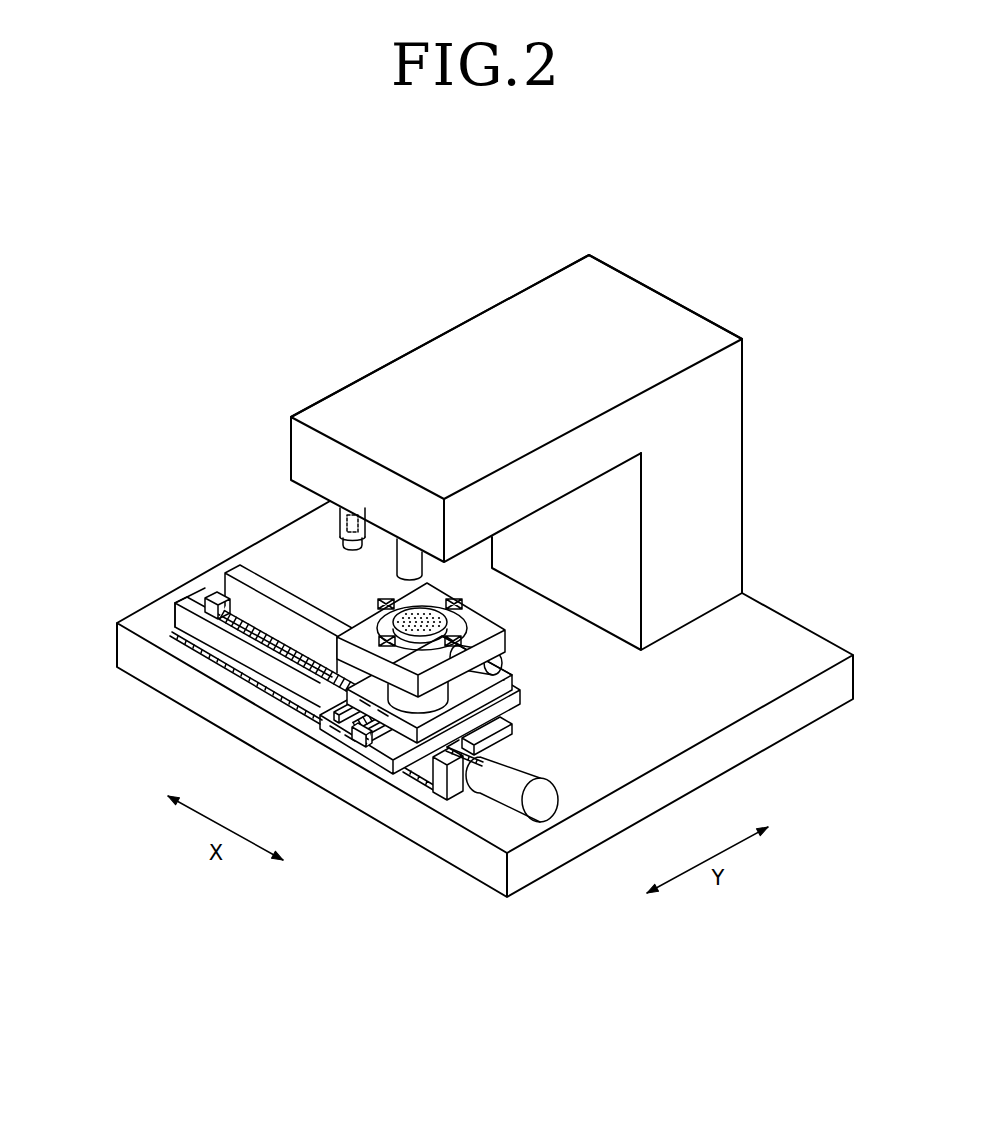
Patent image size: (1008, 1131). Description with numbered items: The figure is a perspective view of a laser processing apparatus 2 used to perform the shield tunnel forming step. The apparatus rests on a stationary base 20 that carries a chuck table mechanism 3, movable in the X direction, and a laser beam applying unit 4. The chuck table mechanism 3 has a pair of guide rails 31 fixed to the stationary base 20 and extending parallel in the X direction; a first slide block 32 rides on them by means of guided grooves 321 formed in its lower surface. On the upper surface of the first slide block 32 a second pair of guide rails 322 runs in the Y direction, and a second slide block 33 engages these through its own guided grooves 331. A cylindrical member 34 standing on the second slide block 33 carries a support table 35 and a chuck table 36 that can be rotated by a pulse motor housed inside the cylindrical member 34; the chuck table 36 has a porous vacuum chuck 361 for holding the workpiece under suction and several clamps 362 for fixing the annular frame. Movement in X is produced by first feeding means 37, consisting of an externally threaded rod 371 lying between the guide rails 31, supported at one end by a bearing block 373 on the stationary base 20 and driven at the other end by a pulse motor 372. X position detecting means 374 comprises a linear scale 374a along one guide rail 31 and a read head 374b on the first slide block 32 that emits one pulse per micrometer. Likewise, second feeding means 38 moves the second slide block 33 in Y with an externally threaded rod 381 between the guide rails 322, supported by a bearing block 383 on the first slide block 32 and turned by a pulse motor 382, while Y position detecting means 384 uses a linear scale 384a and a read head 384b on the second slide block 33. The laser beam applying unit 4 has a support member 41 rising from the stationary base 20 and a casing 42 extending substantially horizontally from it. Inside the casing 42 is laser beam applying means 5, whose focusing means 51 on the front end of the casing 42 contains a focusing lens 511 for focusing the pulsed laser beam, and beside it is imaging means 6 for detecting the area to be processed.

The laser processing apparatus 2 is at (715, 277).
The stationary base 20 is at (805, 624).
The chuck table mechanism 3 is at (620, 738).
The guide rails 31 is at (217, 592).
The first slide block 32 is at (377, 762).
The guided grooves 321 is at (392, 782).
The guide rails 322 is at (300, 750).
The second slide block 33 is at (489, 713).
The guided grooves 331 is at (325, 700).
The cylindrical member 34 is at (440, 697).
The support table 35 is at (487, 630).
The chuck table 36 is at (382, 628).
The vacuum chuck 361 is at (417, 612).
The clamps 362 is at (380, 600).
The first feeding means 37 is at (472, 808).
The externally threaded rod 371 is at (218, 680).
The pulse motor 372 is at (548, 806).
The bearing block 373 is at (178, 592).
The X position detecting means 374 is at (428, 800).
The linear scale 374a is at (170, 640).
The read head 374b is at (404, 770).
The second feeding means 38 is at (512, 678).
The externally threaded rod 381 is at (318, 720).
The pulse motor 382 is at (498, 669).
The bearing block 383 is at (335, 760).
The Y position detecting means 384 is at (512, 770).
The linear scale 384a is at (482, 808).
The read head 384b is at (528, 705).
The laser beam applying unit 4 is at (380, 303).
The support member 41 is at (745, 477).
The casing 42 is at (487, 308).
The laser beam applying means 5 is at (320, 542).
The focusing means 51 is at (340, 543).
The focusing lens 511 is at (352, 514).
The imaging means 6 is at (396, 553).